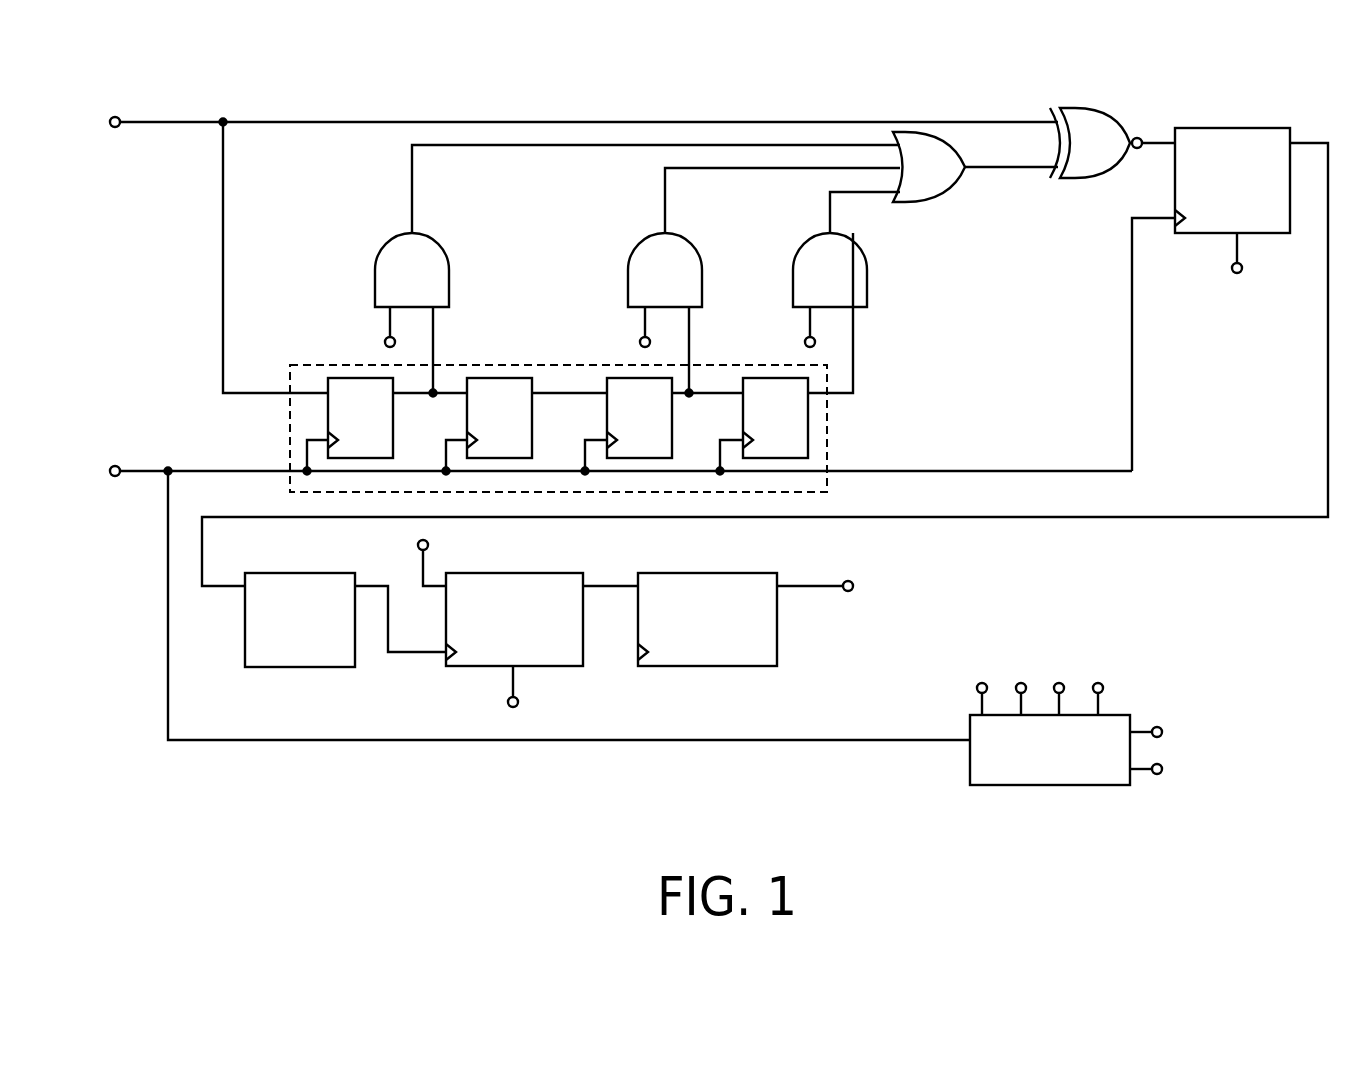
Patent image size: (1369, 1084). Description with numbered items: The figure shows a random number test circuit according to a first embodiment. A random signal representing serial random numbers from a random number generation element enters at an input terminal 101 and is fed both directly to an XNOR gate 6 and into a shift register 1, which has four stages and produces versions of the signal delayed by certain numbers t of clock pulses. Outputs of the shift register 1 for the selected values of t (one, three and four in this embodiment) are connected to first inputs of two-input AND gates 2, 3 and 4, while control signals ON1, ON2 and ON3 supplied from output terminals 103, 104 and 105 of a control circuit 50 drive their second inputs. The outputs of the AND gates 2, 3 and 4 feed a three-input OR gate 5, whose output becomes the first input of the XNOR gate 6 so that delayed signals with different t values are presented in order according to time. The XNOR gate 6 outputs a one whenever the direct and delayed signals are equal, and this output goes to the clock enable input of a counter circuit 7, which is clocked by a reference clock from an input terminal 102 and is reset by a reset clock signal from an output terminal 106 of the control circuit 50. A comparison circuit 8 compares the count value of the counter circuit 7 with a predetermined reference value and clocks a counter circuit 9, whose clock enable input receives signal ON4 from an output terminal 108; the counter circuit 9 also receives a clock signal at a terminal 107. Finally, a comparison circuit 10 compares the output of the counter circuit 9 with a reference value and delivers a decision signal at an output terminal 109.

The shift register 1 is at (827, 427).
The AND gate 2 is at (449, 285).
The AND gate 3 is at (702, 285).
The AND gate 4 is at (867, 285).
The OR gate 5 is at (945, 202).
The XNOR gate 6 is at (1085, 178).
The counter circuit 7 is at (1212, 128).
The comparison circuit 8 is at (340, 667).
The counter circuit 9 is at (565, 666).
The comparison circuit 10 is at (713, 666).
The control circuit 50 is at (1050, 785).
The input terminal 101 is at (115, 127).
The input terminal 102 is at (116, 466).
The output terminal 103 is at (385, 342).
The output terminal 104 is at (640, 342).
The output terminal 105 is at (805, 342).
The output terminal 106 is at (1237, 273).
The CLK clock terminal 107 is at (518, 702).
The output terminal 108 is at (428, 545).
The output terminal 109 is at (848, 591).